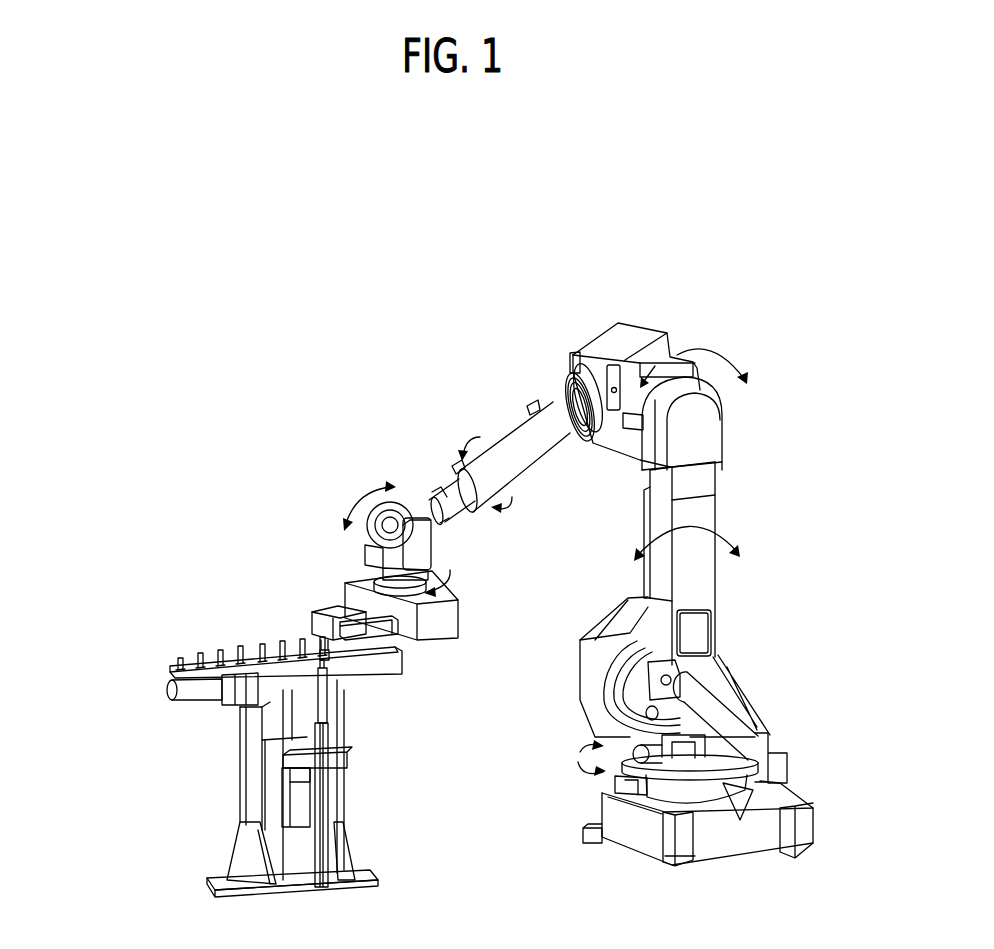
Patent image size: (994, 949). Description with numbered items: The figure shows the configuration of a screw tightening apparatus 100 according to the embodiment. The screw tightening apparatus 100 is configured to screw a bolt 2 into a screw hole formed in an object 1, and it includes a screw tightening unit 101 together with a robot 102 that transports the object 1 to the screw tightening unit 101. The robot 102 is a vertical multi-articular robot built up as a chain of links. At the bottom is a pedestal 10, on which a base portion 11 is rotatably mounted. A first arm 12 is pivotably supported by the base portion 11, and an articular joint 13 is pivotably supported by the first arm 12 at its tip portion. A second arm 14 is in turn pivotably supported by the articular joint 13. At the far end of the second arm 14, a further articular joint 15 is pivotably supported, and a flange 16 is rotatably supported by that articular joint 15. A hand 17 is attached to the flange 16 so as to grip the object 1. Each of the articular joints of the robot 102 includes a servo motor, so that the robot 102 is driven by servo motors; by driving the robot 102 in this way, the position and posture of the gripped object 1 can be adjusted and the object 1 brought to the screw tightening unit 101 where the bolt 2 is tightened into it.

The screw tightening apparatus 100 is at (620, 284).
The robot 102 is at (788, 391).
The pedestal 10 is at (635, 834).
The base portion 11 is at (594, 718).
The first arm 12 is at (717, 573).
The articular joint 13 is at (605, 345).
The second arm 14 is at (503, 437).
The articular joint 15 is at (430, 550).
The flange 16 is at (375, 580).
The hand 17 is at (457, 620).
The object 1 is at (330, 607).
The bolt 2 is at (181, 656).
The screw tightening unit 101 is at (133, 700).